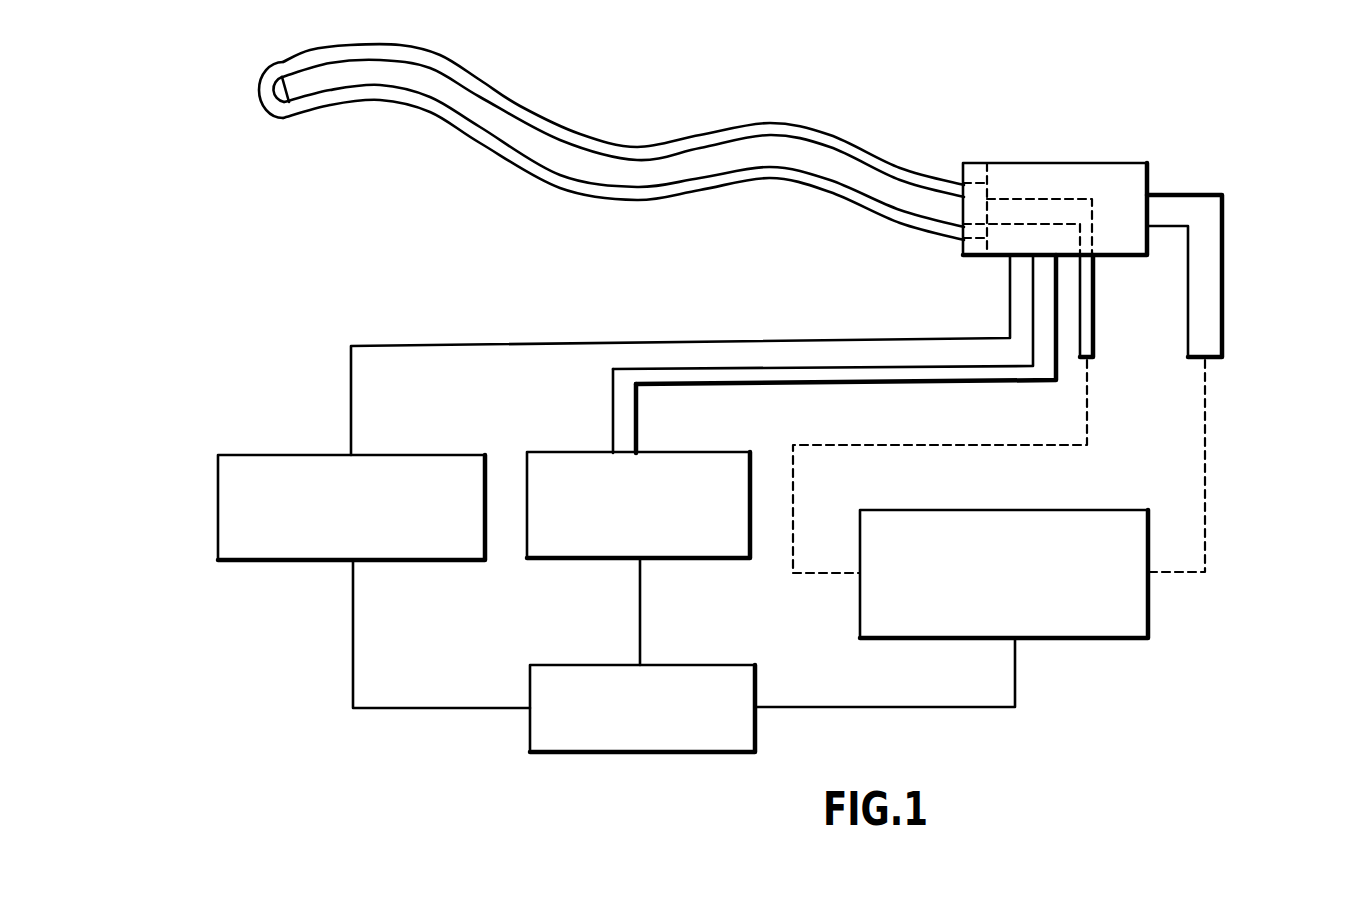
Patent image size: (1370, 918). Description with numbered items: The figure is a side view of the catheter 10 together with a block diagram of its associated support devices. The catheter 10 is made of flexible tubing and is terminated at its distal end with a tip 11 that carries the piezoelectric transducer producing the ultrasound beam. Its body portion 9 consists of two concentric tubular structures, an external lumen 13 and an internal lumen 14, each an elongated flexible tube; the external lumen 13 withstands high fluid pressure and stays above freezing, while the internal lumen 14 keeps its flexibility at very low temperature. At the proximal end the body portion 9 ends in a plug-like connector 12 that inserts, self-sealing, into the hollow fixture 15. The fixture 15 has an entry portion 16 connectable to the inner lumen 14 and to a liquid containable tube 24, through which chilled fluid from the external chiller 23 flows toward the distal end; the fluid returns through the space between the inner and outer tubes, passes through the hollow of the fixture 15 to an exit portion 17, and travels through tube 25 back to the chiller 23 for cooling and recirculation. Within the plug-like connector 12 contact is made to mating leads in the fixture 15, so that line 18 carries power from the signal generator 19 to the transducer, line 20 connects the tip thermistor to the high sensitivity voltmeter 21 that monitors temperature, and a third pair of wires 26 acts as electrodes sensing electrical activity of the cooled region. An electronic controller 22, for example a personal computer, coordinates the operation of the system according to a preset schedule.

The catheter body portion 9 is at (427, 74).
The catheter 10 is at (697, 106).
The tip 11 is at (268, 93).
The plug-like connector 12 is at (975, 168).
The external lumen 13 is at (460, 117).
The internal lumen 14 is at (817, 157).
The fixture 15 is at (1058, 178).
The entry portion 16 is at (1088, 358).
The exit portion 17 is at (1214, 357).
The line 18 is at (922, 338).
The signal generator 19 is at (278, 455).
The line 20 is at (864, 384).
The high sensitivity voltmeter 21 is at (545, 453).
The electronic controller 22 is at (608, 665).
The chiller 23 is at (1090, 638).
The tube 24 is at (1040, 447).
The tube 25 is at (1205, 445).
The pair of wires 26 is at (613, 375).